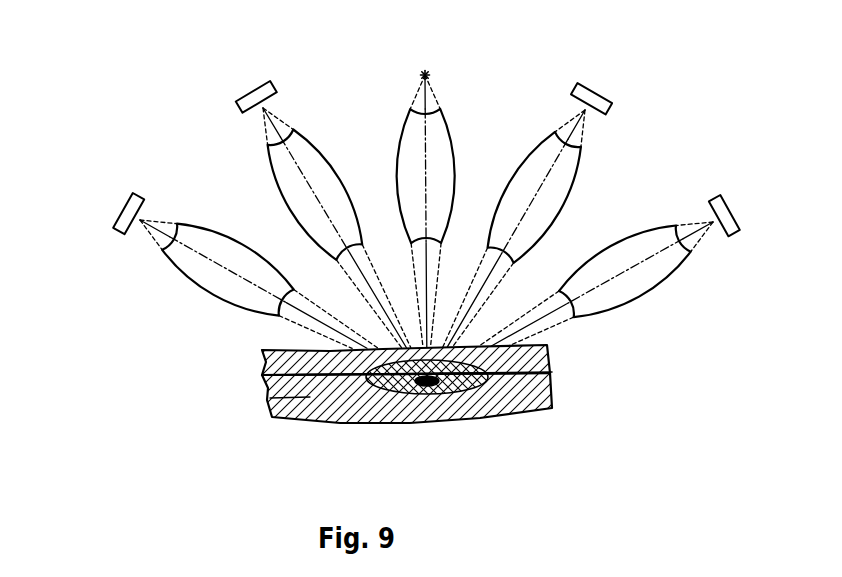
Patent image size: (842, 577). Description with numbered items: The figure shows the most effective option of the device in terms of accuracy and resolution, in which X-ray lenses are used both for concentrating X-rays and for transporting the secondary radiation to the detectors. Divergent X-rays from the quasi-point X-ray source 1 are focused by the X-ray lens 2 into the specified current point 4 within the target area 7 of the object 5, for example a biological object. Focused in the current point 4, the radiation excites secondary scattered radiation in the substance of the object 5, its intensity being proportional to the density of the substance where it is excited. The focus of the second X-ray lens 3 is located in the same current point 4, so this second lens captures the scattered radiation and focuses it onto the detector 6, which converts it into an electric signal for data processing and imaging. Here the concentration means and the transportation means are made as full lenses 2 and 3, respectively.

The X-ray source 1 is at (422, 73).
The X-ray lens 2 is at (418, 131).
The second X-ray lens 3 is at (188, 262).
The current point 4 is at (262, 375).
The object 5 is at (264, 403).
The detector 6 is at (114, 223).
The target area 7 is at (552, 372).